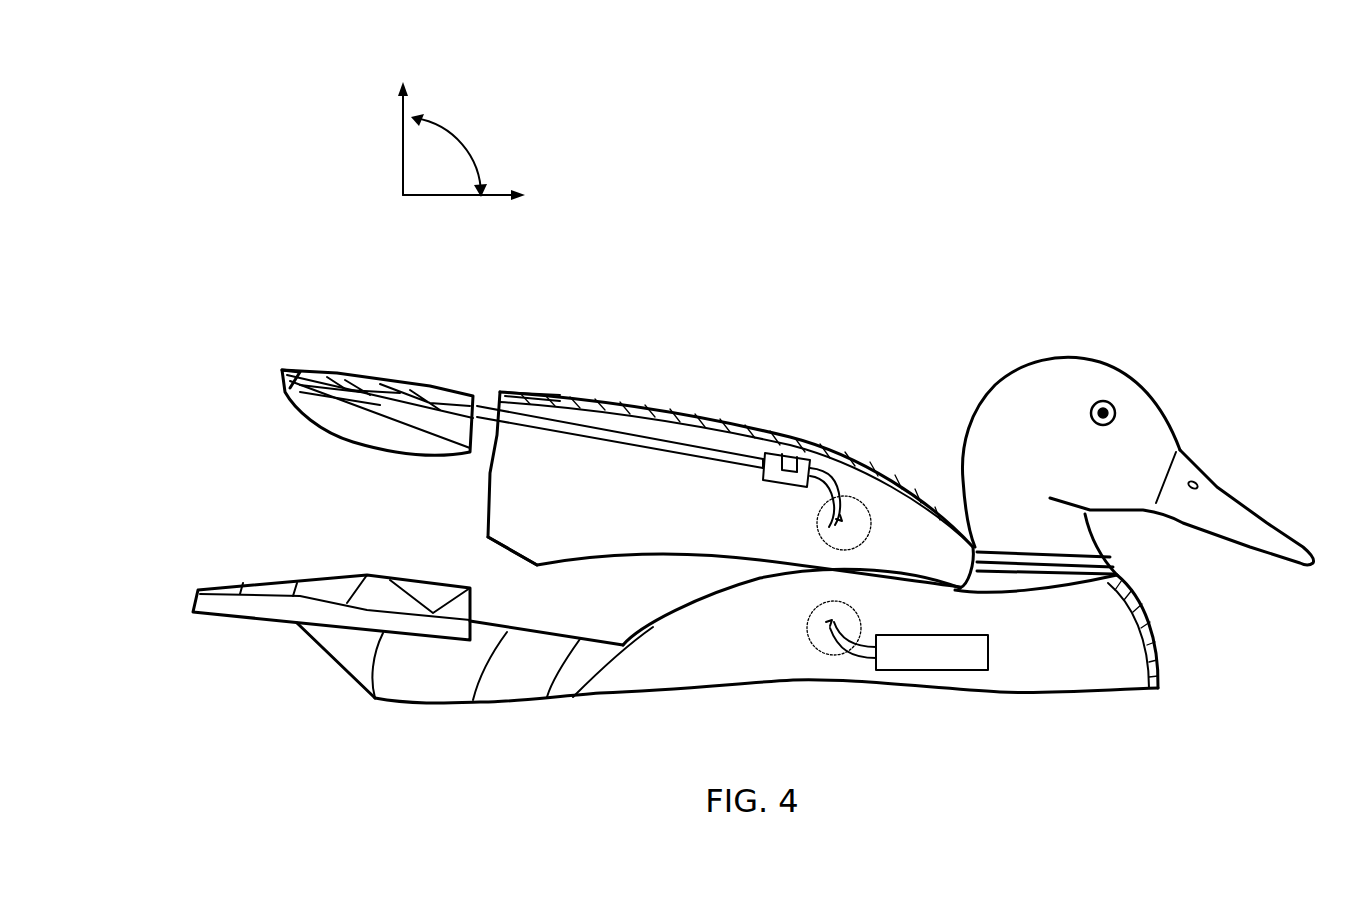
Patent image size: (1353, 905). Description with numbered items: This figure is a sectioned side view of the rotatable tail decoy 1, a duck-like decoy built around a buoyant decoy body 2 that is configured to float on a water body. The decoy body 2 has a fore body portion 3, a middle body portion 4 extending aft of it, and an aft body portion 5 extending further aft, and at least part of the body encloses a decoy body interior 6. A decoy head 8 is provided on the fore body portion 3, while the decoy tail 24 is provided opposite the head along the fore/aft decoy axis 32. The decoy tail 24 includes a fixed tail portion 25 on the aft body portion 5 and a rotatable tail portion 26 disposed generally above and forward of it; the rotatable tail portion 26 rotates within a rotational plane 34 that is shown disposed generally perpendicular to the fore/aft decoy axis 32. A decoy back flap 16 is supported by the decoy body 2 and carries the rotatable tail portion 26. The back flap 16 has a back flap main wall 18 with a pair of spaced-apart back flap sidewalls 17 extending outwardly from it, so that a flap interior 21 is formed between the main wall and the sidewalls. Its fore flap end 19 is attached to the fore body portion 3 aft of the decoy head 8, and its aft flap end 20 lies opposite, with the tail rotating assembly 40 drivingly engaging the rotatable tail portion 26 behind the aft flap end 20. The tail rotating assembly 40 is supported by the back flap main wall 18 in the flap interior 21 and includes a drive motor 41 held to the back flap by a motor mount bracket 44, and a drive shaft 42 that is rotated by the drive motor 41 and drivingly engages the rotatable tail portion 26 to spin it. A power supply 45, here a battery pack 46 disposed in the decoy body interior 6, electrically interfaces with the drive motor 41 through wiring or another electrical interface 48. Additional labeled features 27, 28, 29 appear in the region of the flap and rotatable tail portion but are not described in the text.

The rotatable tail decoy 1 is at (243, 262).
The decoy body 2 is at (1164, 643).
The fore body portion 3 is at (1147, 603).
The middle body portion 4 is at (707, 597).
The aft body portion 5 is at (353, 640).
The decoy body interior 6 is at (717, 640).
The decoy head 8 is at (1145, 423).
The decoy back flap 16 is at (690, 410).
The back flap sidewalls 17 is at (540, 480).
The back flap main wall 18 is at (667, 413).
The fore flap end 19 is at (990, 543).
The aft flap end 20 is at (487, 517).
The flap interior 21 is at (593, 427).
The decoy tail 24 is at (224, 428).
The fixed tail portion 25 is at (230, 603).
The rotatable tail portion 26 is at (383, 366).
The wing base 27 is at (500, 390).
The tail feather portions 28 is at (342, 370).
The tail tip 29 is at (282, 372).
The fore/aft decoy axis 32 is at (442, 198).
The rotational plane 34 is at (402, 152).
The tail rotating assembly 40 is at (861, 494).
The drive motor 41 is at (783, 488).
The drive shaft 42 is at (655, 447).
The motor mount bracket 44 is at (790, 453).
The power supply 45 is at (996, 650).
The battery pack 46 is at (947, 640).
The electrical interface 48 is at (872, 540).